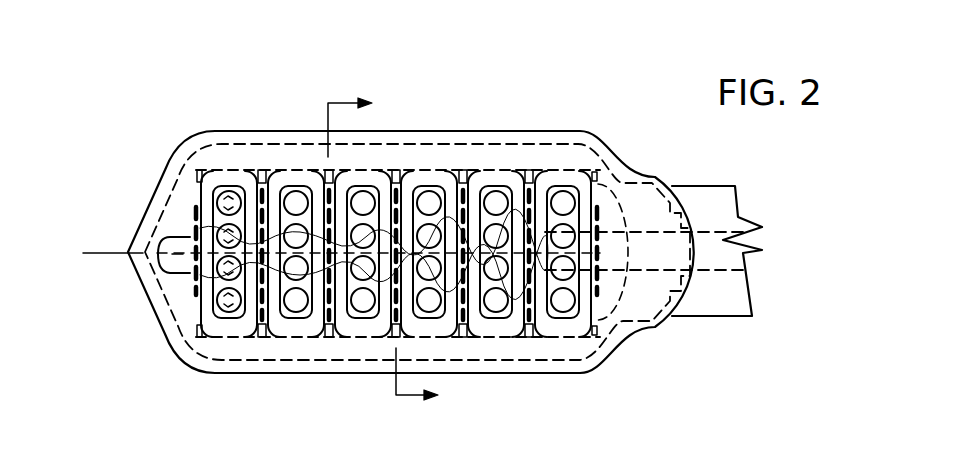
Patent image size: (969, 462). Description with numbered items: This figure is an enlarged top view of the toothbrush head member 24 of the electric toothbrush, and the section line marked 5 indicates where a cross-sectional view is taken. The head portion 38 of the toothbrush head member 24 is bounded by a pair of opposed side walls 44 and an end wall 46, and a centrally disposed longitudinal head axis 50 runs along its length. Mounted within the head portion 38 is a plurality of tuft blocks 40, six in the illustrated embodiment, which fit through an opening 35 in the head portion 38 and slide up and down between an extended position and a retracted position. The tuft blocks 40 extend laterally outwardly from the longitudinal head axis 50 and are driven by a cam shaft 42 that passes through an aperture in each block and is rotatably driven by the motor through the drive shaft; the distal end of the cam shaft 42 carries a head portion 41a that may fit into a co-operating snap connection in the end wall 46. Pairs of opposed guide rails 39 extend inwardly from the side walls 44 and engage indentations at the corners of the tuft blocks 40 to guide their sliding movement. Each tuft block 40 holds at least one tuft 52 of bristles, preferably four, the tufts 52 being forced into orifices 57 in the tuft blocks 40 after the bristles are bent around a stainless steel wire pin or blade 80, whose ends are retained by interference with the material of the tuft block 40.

The toothbrush head member 24 is at (633, 137).
The opening 35 is at (348, 337).
The head portion 38 is at (460, 131).
The guide rails 39 is at (528, 170).
The tuft blocks 40 is at (572, 330).
The head portion of cam shaft distal end 41a is at (171, 266).
The cam shaft 42 is at (648, 250).
The side walls 44 is at (414, 160).
The end wall 46 is at (167, 163).
The longitudinal head axis 50 is at (113, 254).
The tuft 52 is at (296, 188).
The orifices 57 is at (296, 305).
The wire pin or blade 80 is at (228, 315).
The section line 5 is at (383, 253).